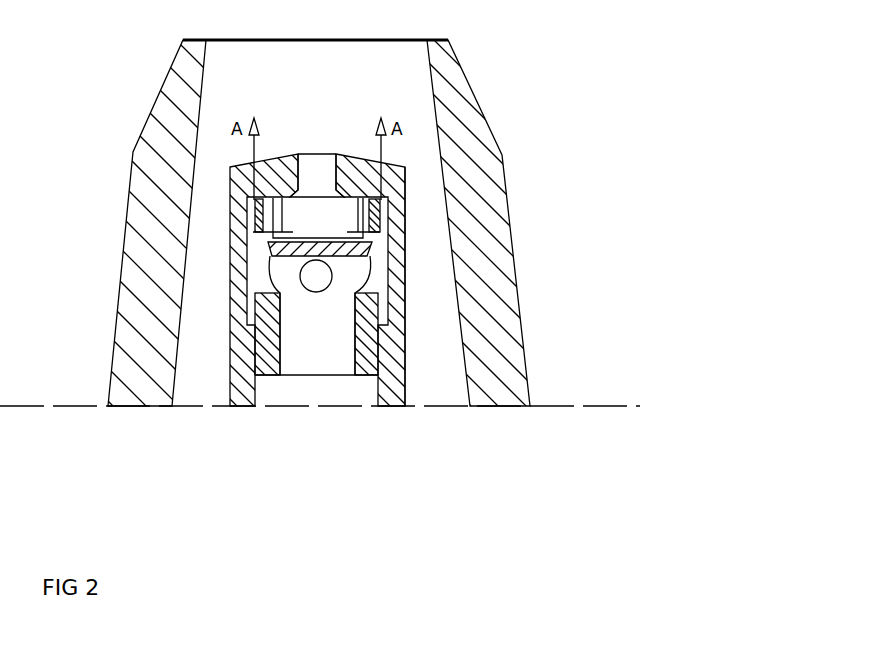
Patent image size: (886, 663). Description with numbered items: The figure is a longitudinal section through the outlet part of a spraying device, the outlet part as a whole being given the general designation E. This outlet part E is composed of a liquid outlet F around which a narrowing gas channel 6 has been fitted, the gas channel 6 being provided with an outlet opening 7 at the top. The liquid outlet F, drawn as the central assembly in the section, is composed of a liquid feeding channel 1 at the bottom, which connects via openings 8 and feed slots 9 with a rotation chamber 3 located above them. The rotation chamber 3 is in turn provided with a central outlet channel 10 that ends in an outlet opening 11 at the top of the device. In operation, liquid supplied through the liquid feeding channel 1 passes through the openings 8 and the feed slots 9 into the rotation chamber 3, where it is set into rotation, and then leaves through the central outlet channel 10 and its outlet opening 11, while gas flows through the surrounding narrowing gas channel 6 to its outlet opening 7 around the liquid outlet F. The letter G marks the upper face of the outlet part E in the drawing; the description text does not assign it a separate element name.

The top surface of housing G is at (372, 21).
The outlet opening 11 is at (331, 233).
The central outlet channel 10 is at (430, 140).
The outlet opening 7 is at (481, 203).
The rotation chamber 3 is at (237, 200).
The feed slots 9 is at (277, 222).
The outlet part of the spraying device E is at (487, 242).
The openings 8 is at (323, 273).
The liquid outlet F is at (367, 334).
The narrowing gas channel 6 is at (438, 357).
The liquid feeding channel 1 is at (406, 345).